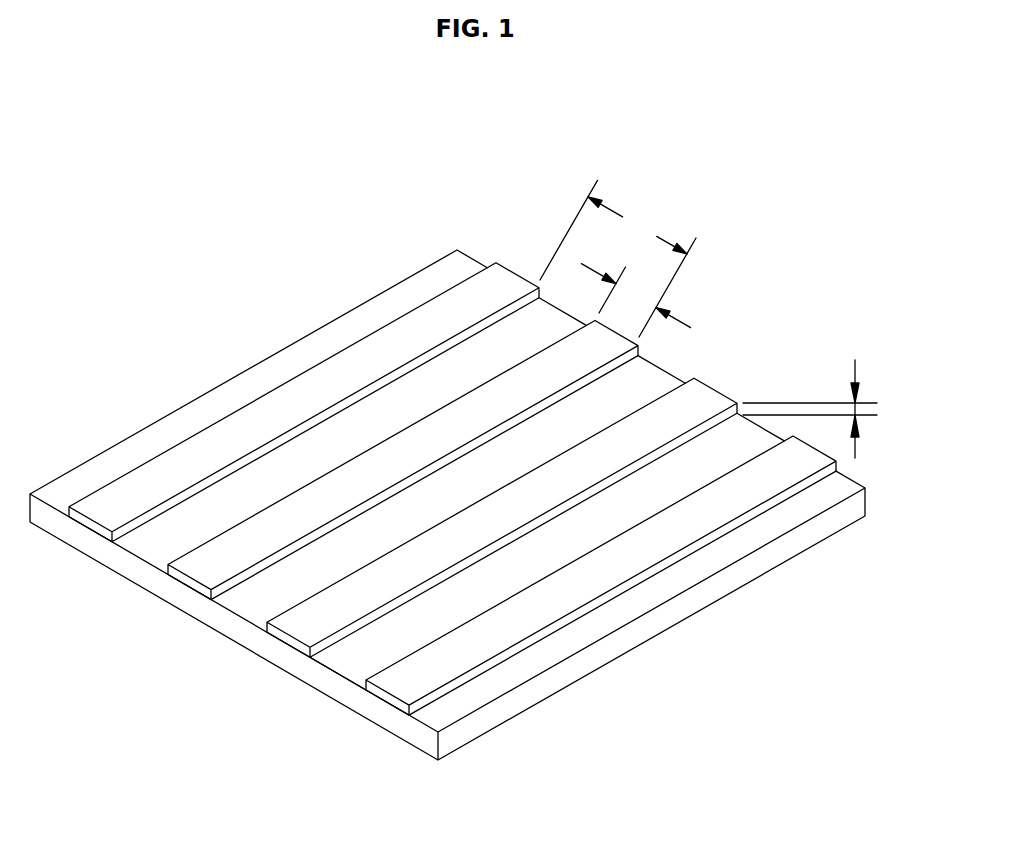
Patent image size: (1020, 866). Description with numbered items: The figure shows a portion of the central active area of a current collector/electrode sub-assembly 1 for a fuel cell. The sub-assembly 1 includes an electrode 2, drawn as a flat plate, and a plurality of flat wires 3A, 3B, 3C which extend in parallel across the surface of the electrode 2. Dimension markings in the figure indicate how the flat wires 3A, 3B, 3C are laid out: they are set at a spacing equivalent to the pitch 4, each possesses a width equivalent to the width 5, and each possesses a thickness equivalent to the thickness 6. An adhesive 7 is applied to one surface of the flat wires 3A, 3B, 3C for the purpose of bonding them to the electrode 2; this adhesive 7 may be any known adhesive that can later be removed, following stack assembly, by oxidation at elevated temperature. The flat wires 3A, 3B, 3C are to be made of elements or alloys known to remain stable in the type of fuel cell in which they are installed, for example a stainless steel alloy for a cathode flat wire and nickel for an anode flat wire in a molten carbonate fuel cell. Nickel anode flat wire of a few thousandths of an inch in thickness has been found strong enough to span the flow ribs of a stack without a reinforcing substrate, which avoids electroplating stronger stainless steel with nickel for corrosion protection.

The current collector/electrode sub-assembly 1 is at (204, 307).
The electrode 2 is at (690, 612).
The flat wire 3A is at (387, 698).
The flat wire 3B is at (287, 640).
The flat wire 3C is at (190, 582).
The pitch 4 is at (618, 258).
The width 5 is at (635, 296).
The thickness 6 is at (855, 360).
The adhesive 7 is at (608, 608).